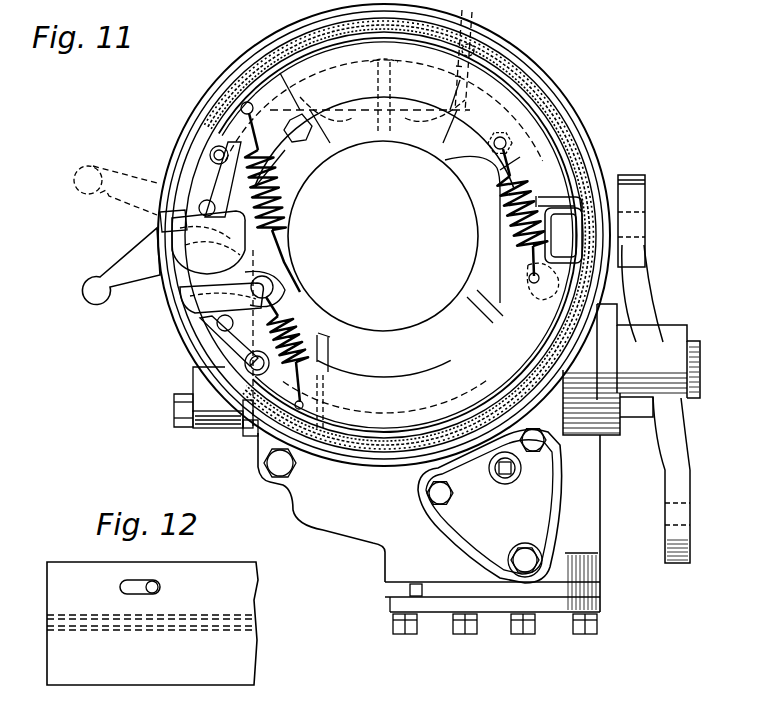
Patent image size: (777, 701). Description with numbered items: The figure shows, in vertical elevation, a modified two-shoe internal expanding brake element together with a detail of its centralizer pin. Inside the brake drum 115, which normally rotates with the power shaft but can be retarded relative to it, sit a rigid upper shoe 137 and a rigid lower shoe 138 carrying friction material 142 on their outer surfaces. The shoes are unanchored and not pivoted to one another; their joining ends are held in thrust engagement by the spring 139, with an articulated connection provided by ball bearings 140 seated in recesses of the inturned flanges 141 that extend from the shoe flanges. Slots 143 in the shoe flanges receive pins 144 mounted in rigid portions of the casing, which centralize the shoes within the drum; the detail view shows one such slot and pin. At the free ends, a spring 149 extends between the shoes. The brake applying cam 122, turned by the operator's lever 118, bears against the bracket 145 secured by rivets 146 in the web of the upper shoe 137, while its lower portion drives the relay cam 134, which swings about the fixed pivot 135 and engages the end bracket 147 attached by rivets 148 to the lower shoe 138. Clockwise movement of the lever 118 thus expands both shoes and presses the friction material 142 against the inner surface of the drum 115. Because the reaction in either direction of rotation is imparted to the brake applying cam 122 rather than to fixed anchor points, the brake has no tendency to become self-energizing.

In FIG. 11, the brake drum 115 is at (517, 64).
In FIG. 11, the friction material 142 is at (553, 106).
In FIG. 11, the slots 143 is at (455, 37).
In FIG. 12, the slots 143 is at (137, 582).
In FIG. 11, the pins 144 is at (472, 48).
In FIG. 12, the pins 144 is at (156, 584).
In FIG. 11, the upper shoe 137 is at (348, 85).
In FIG. 11, the lower shoe 138 is at (422, 392).
In FIG. 11, the spring 139 is at (507, 215).
In FIG. 11, the ball bearings 140 is at (578, 200).
In FIG. 11, the inturned flanges 141 is at (560, 190).
In FIG. 11, the rivets 146 is at (208, 152).
In FIG. 11, the spring 149 is at (280, 243).
In FIG. 11, the bracket 145 is at (207, 183).
In FIG. 11, the lever 118 is at (105, 287).
In FIG. 11, the brake applying cam 122 is at (195, 262).
In FIG. 11, the relay cam 134 is at (273, 282).
In FIG. 11, the fixed pivot 135 is at (272, 290).
In FIG. 11, the end bracket 147 is at (238, 338).
In FIG. 11, the rivets 148 is at (237, 428).